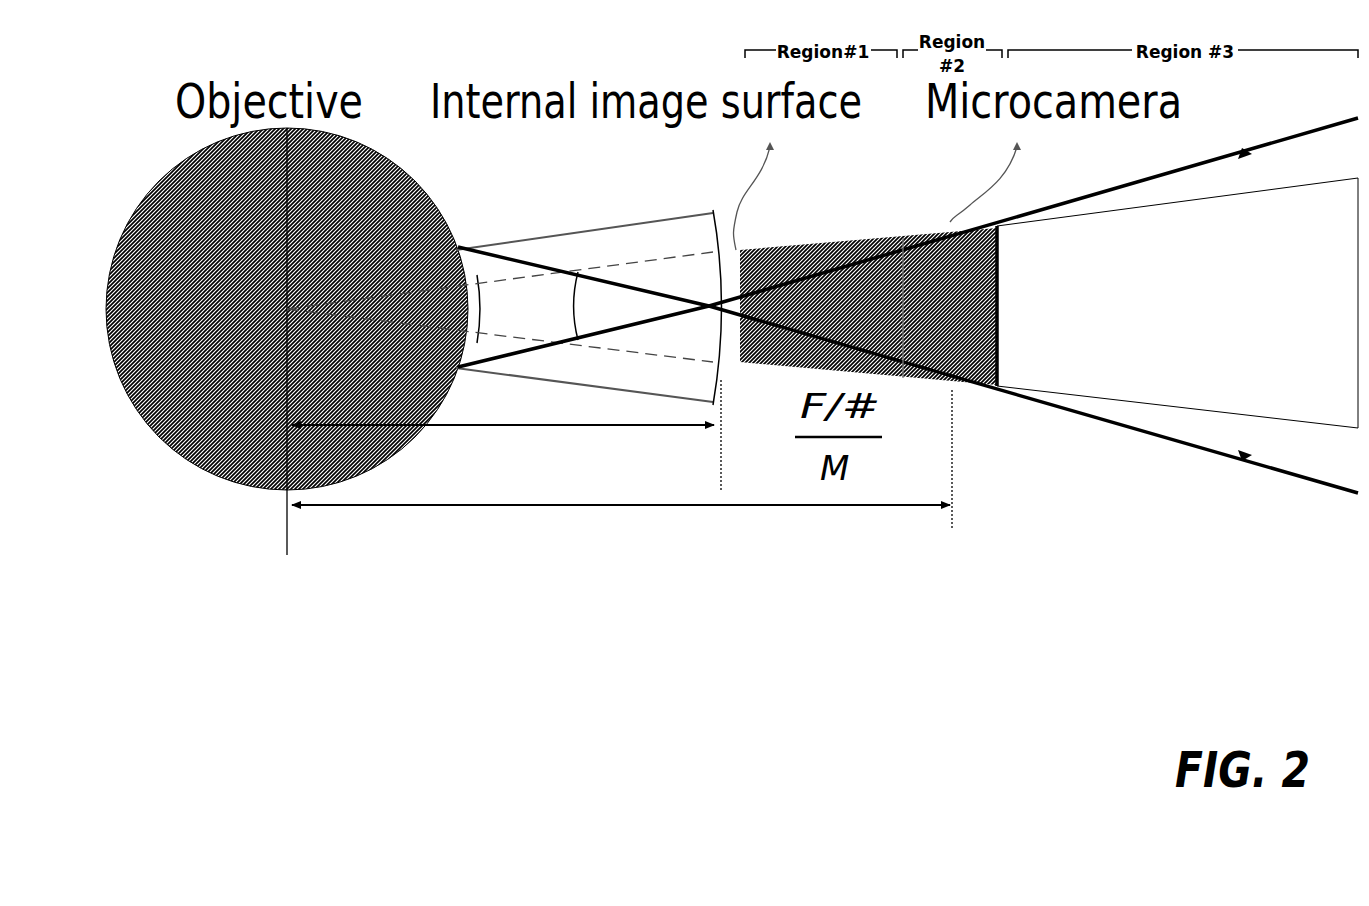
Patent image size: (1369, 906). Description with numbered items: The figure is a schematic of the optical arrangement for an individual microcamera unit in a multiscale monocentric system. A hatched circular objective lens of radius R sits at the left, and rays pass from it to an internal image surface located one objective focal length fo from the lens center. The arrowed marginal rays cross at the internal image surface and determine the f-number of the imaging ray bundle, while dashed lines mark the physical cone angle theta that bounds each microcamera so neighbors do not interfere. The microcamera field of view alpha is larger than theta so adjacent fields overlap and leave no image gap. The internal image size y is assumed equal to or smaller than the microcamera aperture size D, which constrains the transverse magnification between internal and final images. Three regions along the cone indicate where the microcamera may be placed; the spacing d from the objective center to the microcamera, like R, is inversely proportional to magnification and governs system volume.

The radius of objective lens R is at (287, 309).
The physical cone angle theta is at (520, 288).
The microcamera field of view alpha is at (589, 306).
The internal image size y is at (707, 388).
The aperture size of the microcamera D is at (977, 370).
The objective focal length fo is at (506, 435).
The spacing between microcamera and symmetrical center d is at (622, 471).